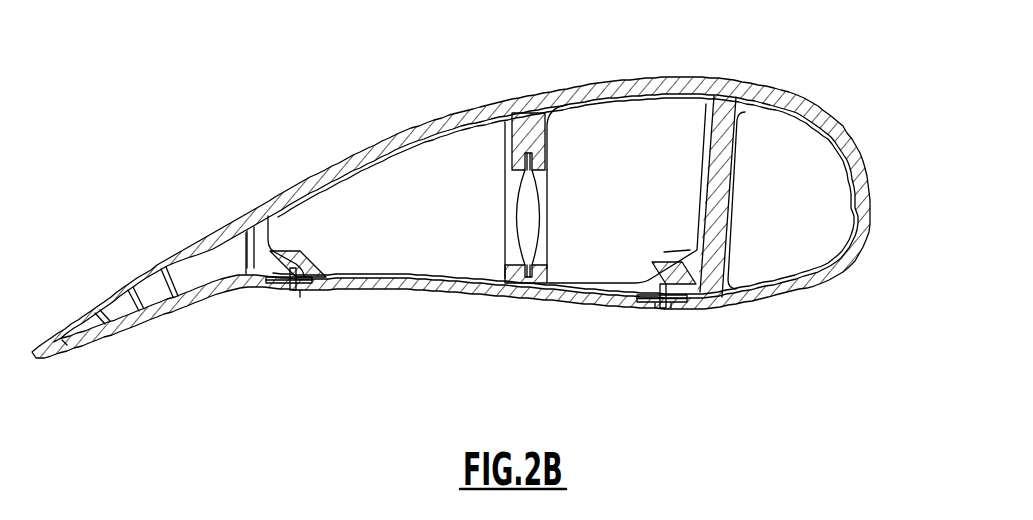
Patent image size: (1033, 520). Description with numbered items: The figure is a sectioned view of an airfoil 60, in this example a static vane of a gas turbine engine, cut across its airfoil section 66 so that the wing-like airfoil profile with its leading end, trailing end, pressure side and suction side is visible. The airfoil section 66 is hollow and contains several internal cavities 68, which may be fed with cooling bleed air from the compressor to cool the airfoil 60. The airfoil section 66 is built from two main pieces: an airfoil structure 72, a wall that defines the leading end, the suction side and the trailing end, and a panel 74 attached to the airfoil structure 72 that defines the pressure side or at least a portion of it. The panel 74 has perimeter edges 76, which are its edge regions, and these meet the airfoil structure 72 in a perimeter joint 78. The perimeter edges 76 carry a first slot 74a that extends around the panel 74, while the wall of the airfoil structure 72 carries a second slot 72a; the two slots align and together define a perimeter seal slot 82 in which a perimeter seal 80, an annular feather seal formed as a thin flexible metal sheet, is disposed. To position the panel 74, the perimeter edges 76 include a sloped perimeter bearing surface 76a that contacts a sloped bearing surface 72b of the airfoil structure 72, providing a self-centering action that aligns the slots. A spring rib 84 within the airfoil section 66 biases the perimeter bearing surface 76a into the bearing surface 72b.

The airfoil 60 is at (262, 351).
The airfoil section 66 is at (754, 73).
The internal cavity 68 is at (228, 277).
The airfoil structure 72 is at (372, 141).
The second slot 72a is at (705, 303).
The bearing surface 72b is at (282, 256).
The panel 74 is at (604, 322).
The first slot 74a is at (630, 303).
The perimeter edges 76 is at (301, 309).
The perimeter bearing surface 76a is at (250, 240).
The perimeter joint 78 is at (308, 252).
The perimeter seal 80 is at (276, 288).
The perimeter seal slot 82 is at (663, 327).
The spring rib 84 is at (532, 190).